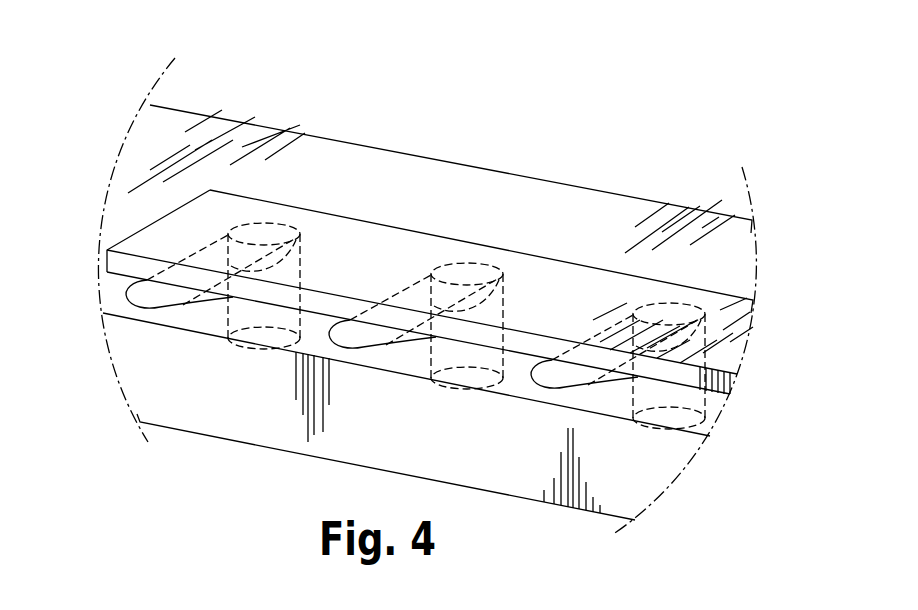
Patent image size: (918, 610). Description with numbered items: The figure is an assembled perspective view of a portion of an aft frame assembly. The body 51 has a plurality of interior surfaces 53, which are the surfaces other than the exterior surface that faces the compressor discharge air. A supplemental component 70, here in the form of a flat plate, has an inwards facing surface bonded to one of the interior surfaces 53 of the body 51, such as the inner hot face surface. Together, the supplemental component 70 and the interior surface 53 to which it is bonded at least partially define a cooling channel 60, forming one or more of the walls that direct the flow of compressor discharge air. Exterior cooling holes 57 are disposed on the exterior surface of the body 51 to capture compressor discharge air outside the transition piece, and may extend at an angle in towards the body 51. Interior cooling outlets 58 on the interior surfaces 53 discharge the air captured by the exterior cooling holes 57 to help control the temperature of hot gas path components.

The body 51 is at (171, 382).
The interior surfaces 53 is at (401, 200).
The exterior cooling holes 57 is at (461, 390).
The interior cooling outlets 58 is at (143, 300).
The cooling channel 60 is at (406, 300).
The supplemental component 70 is at (126, 218).